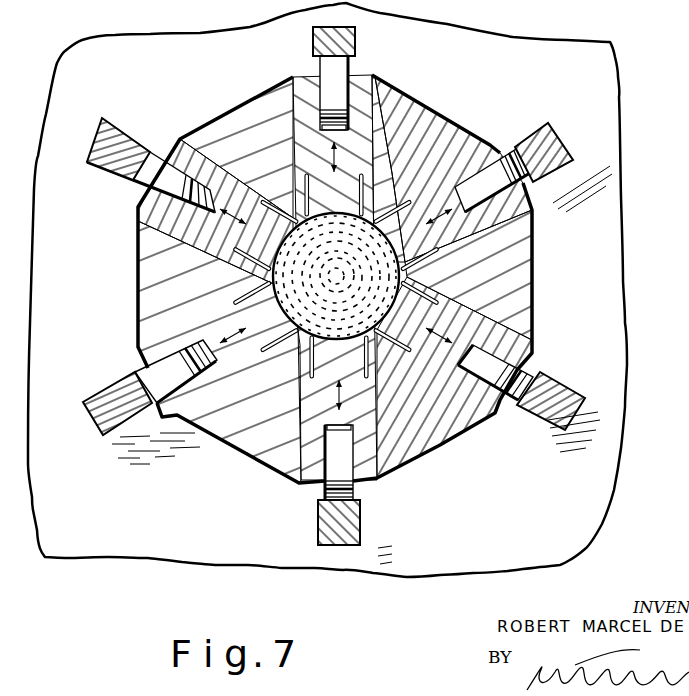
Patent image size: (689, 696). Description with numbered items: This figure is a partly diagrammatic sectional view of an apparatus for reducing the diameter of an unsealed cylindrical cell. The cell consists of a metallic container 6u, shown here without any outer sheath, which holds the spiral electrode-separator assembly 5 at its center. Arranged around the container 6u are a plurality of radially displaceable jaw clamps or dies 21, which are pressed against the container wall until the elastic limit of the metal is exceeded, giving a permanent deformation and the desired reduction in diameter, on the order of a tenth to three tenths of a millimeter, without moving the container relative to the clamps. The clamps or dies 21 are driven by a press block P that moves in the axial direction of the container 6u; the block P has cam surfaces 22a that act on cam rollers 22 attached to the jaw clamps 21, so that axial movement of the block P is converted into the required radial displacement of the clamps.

The cam rollers 22 is at (341, 66).
The cam surfaces 22a is at (343, 40).
The jaw clamps or dies 21 is at (345, 200).
The spiral electrode-separator assembly 5 is at (371, 260).
The metallic container 6u is at (333, 343).
The press block P is at (604, 213).